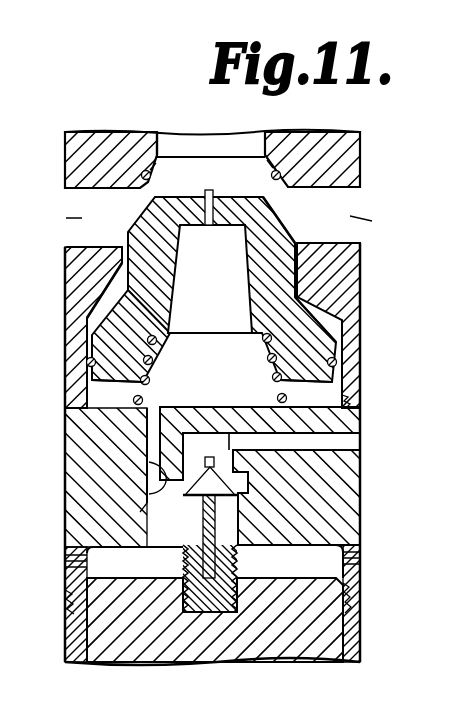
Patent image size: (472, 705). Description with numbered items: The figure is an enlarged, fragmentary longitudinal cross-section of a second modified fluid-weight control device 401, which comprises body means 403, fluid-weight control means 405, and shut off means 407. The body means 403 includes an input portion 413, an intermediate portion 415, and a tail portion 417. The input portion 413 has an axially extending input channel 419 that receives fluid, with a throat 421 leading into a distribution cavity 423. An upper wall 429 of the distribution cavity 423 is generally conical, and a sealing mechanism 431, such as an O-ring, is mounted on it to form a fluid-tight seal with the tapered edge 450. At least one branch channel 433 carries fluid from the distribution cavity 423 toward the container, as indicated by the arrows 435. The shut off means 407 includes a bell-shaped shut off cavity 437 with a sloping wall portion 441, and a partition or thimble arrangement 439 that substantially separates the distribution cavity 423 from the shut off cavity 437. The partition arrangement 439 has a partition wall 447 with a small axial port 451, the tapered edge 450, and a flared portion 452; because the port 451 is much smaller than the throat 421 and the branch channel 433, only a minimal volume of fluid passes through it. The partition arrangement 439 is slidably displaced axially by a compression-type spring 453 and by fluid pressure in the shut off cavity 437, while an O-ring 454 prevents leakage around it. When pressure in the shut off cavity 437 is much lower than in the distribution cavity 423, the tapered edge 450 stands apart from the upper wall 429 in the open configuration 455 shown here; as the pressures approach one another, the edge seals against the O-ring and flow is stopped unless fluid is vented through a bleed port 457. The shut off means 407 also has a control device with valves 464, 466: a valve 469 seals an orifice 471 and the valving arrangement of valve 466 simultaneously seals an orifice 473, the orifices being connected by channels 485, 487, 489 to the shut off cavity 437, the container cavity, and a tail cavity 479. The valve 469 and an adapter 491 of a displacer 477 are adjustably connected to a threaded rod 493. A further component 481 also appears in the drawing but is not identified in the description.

The fluid-weight control device 401 is at (370, 172).
The body means 403 is at (395, 348).
The fluid-weight control means 405 is at (389, 500).
The shut off means 407 is at (58, 232).
The input portion 413 is at (92, 138).
The intermediate portion 415 is at (363, 378).
The tail portion 417 is at (360, 637).
The input channel 419 is at (160, 132).
The throat 421 is at (211, 144).
The distribution cavity 423 is at (310, 159).
The upper wall 429 is at (154, 167).
The sealing mechanism 431 is at (142, 172).
The branch channel 433 is at (66, 195).
The arrows 435 is at (82, 218).
The shut off cavity 437 is at (223, 275).
The partition arrangement 439 is at (296, 276).
The sloping wall portion 441 is at (94, 308).
The partition wall 447 is at (188, 230).
The tapered edge 450 is at (272, 198).
The port 451 is at (213, 197).
The flared portion 452 is at (85, 336).
The compression-type spring 453 is at (214, 369).
The O-ring 454 is at (86, 362).
The open configuration 455 is at (55, 209).
The bleed port 457 is at (157, 412).
The valve 464 is at (185, 505).
The valve 466 is at (88, 564).
The valve 469 is at (241, 479).
The orifice 471 is at (229, 450).
The orifice 473 is at (243, 560).
The displacer 477 is at (316, 650).
The tail cavity 479 is at (70, 600).
The left lower body 481 is at (52, 465).
The channel 485 is at (148, 498).
The channel 487 is at (362, 437).
The channel 489 is at (165, 545).
The adapter 491 is at (230, 597).
The threaded rod 493 is at (216, 541).